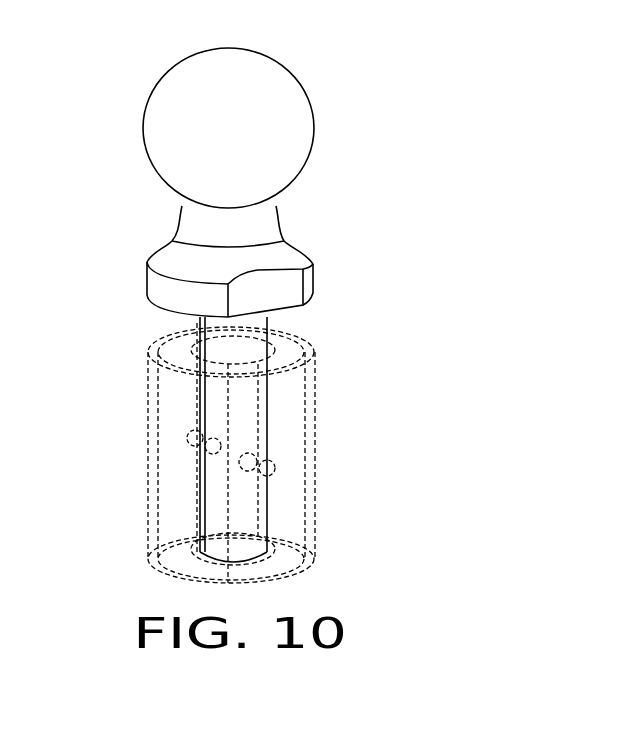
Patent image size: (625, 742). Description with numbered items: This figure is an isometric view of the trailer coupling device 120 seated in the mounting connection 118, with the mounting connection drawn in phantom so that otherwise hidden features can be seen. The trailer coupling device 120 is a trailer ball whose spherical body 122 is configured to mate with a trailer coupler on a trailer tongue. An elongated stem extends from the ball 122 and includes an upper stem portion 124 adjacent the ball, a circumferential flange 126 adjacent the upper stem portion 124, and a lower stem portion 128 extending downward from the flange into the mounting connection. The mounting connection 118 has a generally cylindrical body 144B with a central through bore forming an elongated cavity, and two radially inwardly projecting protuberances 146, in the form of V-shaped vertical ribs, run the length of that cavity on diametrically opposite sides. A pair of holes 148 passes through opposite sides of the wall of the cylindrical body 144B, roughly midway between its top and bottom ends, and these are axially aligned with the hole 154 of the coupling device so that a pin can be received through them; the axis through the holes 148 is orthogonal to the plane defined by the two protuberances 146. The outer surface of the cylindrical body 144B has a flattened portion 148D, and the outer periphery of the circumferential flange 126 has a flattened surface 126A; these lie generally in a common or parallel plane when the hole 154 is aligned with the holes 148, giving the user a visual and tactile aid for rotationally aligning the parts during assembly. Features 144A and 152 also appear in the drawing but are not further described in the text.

The mounting connection 118 is at (153, 568).
The trailer coupling device 120 is at (293, 77).
The spherical body 122 is at (314, 133).
The upper stem portion 124 is at (278, 219).
The circumferential flange 126 is at (313, 262).
The flattened surface 126A is at (288, 288).
The lower stem portion 128 is at (268, 328).
The first end of sleeve 144A is at (194, 348).
The cylindrical body 144B is at (148, 513).
The protuberances 146 is at (197, 397).
The holes 148 is at (188, 435).
The flattened portion 148D is at (292, 427).
The slot 152 is at (198, 332).
The hole 154 is at (258, 460).